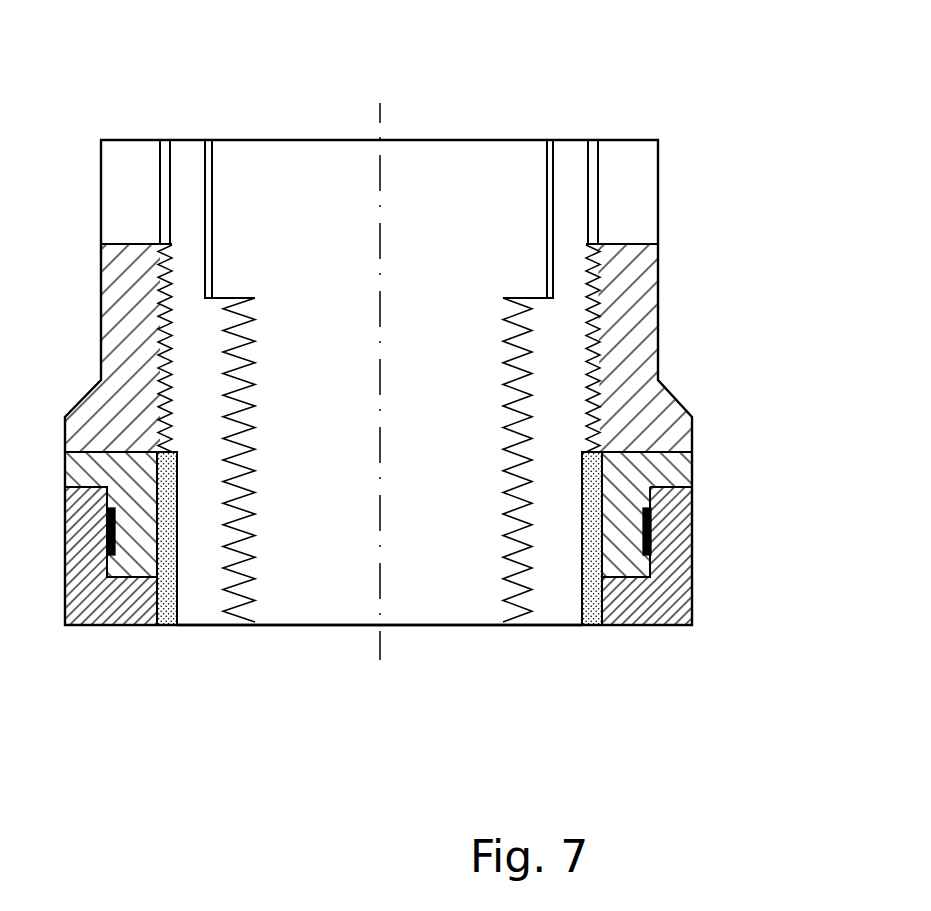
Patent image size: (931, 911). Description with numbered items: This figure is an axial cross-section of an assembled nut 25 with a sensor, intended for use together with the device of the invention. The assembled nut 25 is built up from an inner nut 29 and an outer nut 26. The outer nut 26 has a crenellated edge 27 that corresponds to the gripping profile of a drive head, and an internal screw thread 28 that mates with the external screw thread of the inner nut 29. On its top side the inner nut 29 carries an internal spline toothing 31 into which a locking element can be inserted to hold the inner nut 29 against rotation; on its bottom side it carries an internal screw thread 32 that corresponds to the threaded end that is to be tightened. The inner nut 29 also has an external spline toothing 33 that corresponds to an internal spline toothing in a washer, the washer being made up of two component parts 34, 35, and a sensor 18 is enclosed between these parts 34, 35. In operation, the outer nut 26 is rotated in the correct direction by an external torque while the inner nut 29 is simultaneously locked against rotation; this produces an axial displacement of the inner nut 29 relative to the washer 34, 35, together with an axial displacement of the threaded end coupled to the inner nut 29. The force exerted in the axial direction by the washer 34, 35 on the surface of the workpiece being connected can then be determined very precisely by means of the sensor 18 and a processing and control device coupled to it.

The assembled nut 25 is at (290, 730).
The outer nut 26 is at (637, 332).
The crenellated edge 27 is at (637, 195).
The internal screw thread 28 is at (588, 272).
The inner nut 29 is at (547, 603).
The internal spline toothing 31 is at (548, 163).
The internal screw thread 32 is at (507, 347).
The external spline toothing 33 is at (580, 603).
The washer part 34 is at (658, 473).
The washer part 35 is at (668, 587).
The sensor 18 is at (653, 532).